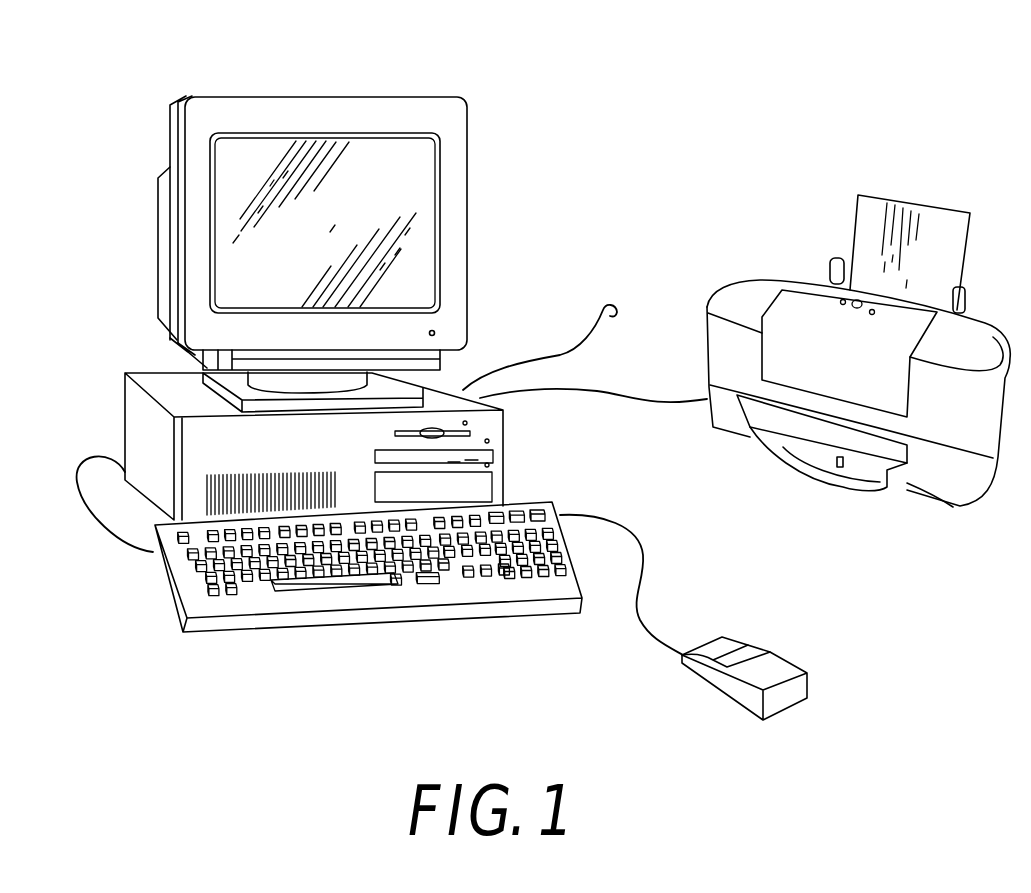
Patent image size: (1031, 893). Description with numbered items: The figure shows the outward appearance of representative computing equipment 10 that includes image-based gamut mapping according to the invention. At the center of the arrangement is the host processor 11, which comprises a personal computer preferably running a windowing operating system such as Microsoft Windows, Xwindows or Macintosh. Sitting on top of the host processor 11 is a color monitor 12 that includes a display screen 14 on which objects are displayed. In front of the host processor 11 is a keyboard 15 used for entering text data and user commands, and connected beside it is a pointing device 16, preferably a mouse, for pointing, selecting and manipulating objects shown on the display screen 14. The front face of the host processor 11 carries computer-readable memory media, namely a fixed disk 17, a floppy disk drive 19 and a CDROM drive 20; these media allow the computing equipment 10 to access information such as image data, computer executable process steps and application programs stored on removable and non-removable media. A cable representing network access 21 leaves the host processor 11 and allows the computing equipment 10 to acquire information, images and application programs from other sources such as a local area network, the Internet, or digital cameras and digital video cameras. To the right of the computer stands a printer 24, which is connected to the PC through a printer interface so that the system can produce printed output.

The computing equipment 10 is at (500, 97).
The host processor 11 is at (157, 367).
The color monitor 12 is at (297, 97).
The display screen 14 is at (418, 190).
The keyboard 15 is at (280, 605).
The pointing device 16 is at (790, 702).
The fixed disk 17 is at (488, 485).
The floppy disk drive 19 is at (488, 452).
The CDROM drive 20 is at (470, 432).
The network access 21 is at (562, 352).
The printer 24 is at (773, 229).